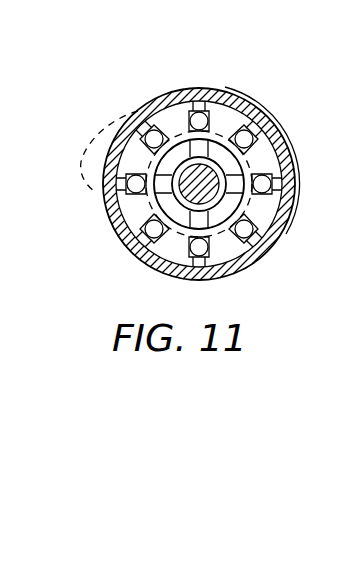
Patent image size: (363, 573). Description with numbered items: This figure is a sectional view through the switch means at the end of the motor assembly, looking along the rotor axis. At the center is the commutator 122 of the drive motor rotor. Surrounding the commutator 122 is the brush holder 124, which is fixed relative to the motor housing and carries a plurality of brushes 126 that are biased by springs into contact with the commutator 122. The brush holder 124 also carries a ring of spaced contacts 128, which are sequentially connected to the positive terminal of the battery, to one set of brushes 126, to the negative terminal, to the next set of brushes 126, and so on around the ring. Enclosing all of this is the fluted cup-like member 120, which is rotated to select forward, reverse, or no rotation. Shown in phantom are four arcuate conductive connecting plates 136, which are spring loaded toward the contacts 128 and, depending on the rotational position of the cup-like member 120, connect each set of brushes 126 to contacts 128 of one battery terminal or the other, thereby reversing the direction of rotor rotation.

The cup-like member 120 is at (270, 126).
The commutator 122 is at (183, 165).
The brush holder 124 is at (277, 207).
The brushes 126 is at (214, 142).
The contacts 128 is at (211, 140).
The arcuate conductive connecting plates 136 is at (305, 138).